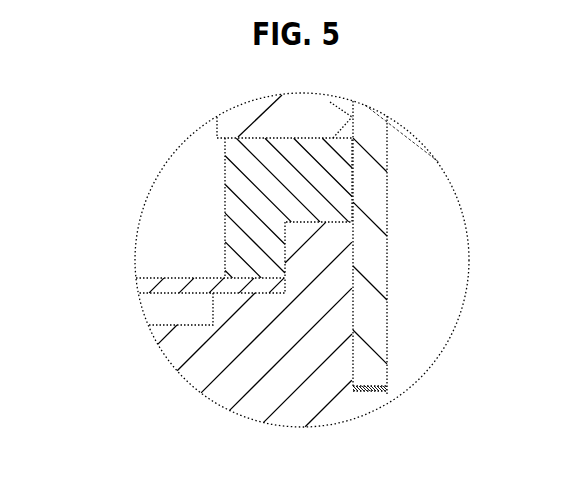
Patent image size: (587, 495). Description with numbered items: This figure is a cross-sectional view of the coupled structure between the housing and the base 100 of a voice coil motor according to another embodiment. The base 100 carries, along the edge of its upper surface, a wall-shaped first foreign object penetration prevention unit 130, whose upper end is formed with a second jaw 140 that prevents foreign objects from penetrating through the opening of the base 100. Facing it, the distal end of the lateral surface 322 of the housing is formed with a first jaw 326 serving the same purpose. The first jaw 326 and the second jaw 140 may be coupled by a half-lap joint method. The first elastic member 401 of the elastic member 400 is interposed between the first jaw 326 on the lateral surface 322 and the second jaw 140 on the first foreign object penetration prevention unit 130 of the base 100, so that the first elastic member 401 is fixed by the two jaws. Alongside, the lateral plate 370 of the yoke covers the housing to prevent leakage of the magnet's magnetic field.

The base 100 is at (232, 375).
The first foreign object penetration prevention unit 130 is at (322, 262).
The second jaw 140 is at (353, 235).
The lateral surface 322 is at (225, 160).
The first jaw 326 is at (225, 225).
The lateral plate 370 is at (378, 208).
The elastic member 400 is at (152, 268).
The first elastic member 401 is at (197, 284).